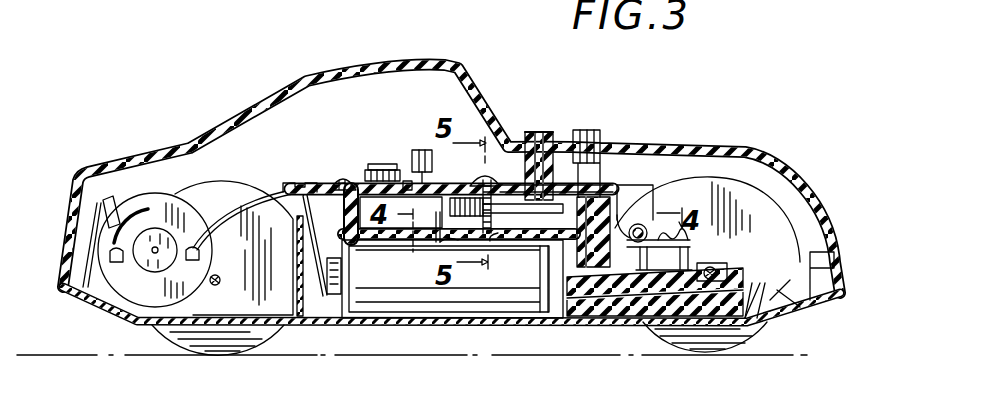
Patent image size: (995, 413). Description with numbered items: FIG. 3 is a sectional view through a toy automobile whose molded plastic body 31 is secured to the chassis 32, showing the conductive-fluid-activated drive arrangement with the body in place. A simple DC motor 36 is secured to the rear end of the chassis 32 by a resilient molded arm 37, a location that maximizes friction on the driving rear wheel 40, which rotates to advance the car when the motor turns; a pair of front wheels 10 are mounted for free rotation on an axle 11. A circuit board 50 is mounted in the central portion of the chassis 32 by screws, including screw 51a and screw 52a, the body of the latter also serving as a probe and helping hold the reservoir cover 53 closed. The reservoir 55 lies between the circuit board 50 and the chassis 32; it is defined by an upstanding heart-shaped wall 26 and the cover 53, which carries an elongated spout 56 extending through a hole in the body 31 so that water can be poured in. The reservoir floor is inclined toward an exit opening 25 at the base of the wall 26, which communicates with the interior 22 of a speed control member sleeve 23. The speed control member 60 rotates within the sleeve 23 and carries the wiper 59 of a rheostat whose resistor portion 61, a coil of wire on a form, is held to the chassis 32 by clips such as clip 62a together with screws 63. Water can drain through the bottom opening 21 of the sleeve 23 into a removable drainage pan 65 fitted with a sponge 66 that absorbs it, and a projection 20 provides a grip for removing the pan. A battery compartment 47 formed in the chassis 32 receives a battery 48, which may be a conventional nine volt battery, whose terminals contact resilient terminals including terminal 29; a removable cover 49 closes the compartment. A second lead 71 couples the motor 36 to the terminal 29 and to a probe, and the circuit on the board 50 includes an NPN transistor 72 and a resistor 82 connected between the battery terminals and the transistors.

The front wheels 10 is at (760, 345).
The axle 11 is at (712, 270).
The projection 20 is at (820, 253).
The bottom opening 21 is at (573, 327).
The interior 22 is at (552, 241).
The speed control member sleeve 23 is at (603, 310).
The exit opening 25 is at (497, 241).
The upstanding wall 26 is at (440, 243).
The terminal 29 is at (308, 252).
The body 31 is at (305, 84).
The chassis 32 is at (503, 323).
The DC motor 36 is at (130, 293).
The resilient molded arm 37 is at (95, 240).
The rear wheel 40 is at (232, 343).
The battery compartment 47 is at (320, 322).
The battery 48 is at (385, 276).
The cover 49 is at (428, 323).
The circuit board 50 is at (512, 148).
The screw 51a is at (343, 180).
The screw 52a is at (483, 180).
The reservoir cover 53 is at (410, 183).
The reservoir 55 is at (588, 190).
The spout 56 is at (532, 131).
The wiper 59 is at (660, 225).
The speed control member 60 is at (597, 132).
The resistor portion 61 is at (640, 226).
The clip 62a is at (690, 243).
The screws 63 is at (665, 228).
The drainage pan 65 is at (643, 323).
The sponge 66 is at (637, 307).
The second lead 71 is at (259, 189).
The NPN transistor 72 is at (419, 149).
The resistor 82 is at (382, 166).